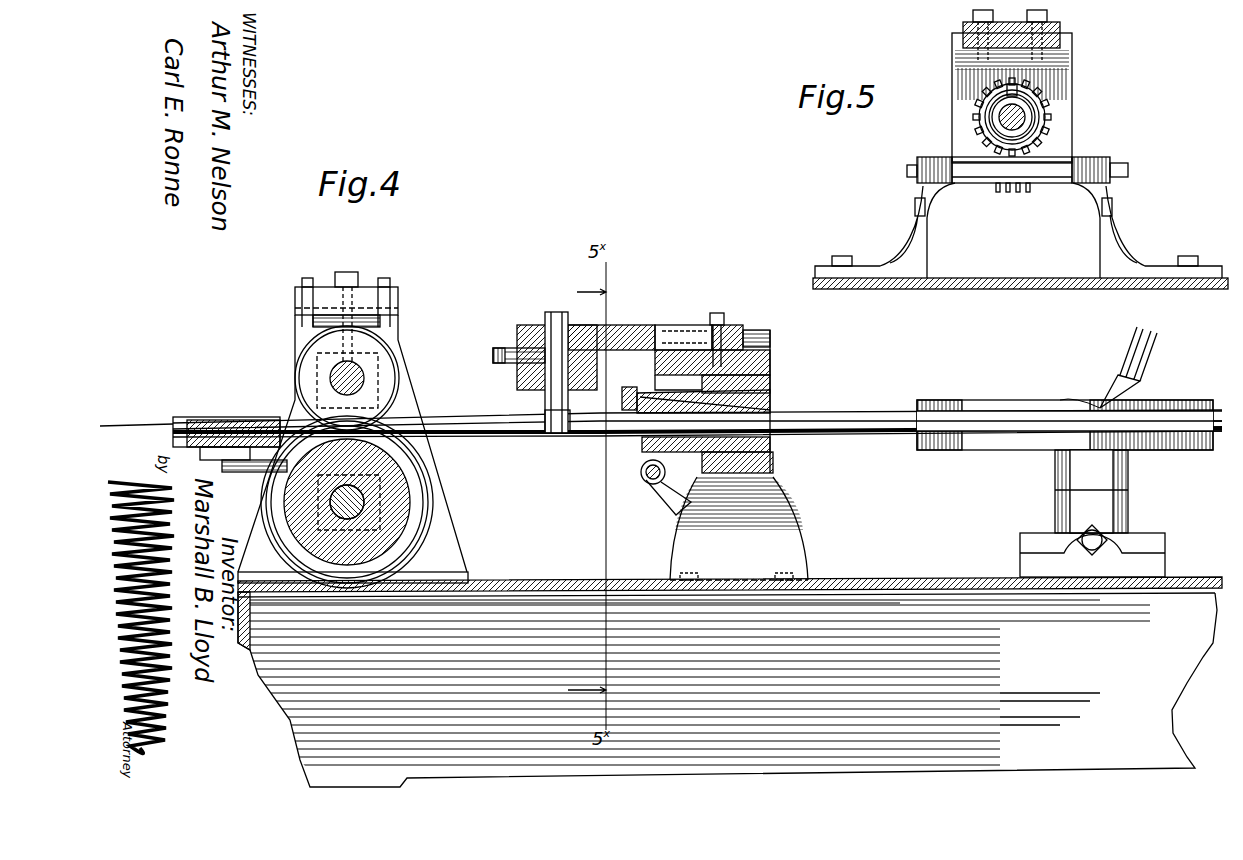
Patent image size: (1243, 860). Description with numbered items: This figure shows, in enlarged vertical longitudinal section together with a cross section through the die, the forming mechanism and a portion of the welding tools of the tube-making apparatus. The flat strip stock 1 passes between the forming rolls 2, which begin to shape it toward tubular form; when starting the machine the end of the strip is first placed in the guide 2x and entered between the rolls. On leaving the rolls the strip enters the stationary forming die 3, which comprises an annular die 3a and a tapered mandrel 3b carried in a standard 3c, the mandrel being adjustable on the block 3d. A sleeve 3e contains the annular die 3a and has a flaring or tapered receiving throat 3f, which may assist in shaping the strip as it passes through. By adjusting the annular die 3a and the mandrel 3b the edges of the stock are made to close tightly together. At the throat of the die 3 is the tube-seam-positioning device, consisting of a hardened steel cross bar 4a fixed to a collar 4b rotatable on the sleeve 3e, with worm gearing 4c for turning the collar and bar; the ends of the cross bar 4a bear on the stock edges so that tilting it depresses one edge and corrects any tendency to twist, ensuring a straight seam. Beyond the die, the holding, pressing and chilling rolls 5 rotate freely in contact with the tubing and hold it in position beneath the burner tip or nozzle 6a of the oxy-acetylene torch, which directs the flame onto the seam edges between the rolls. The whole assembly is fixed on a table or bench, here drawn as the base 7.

In FIG. 4, the flat strip stock 1 is at (137, 423).
In FIG. 4, the forming rolls 2 is at (317, 368).
In FIG. 4, the guide 2x is at (223, 424).
In FIG. 4, the stationary forming die 3 is at (719, 455).
In FIG. 4, the annular die 3a is at (772, 375).
In FIG. 4, the tapered mandrel 3b is at (575, 435).
In FIG. 5, the tapered mandrel 3b is at (1030, 122).
In FIG. 4, the standard 3c is at (787, 524).
In FIG. 4, the block 3d is at (623, 325).
In FIG. 5, the block 3d is at (1060, 32).
In FIG. 4, the sleeve 3e is at (678, 394).
In FIG. 5, the sleeve 3e is at (990, 128).
In FIG. 4, the receiving throat 3f is at (640, 449).
In FIG. 5, the receiving throat 3f is at (1045, 143).
In FIG. 5, the cross bar 4a is at (1050, 103).
In FIG. 5, the collar 4b is at (992, 106).
In FIG. 5, the worm gearing 4c is at (999, 181).
In FIG. 4, the holding, pressing and chilling rolls 5 is at (1007, 407).
In FIG. 4, the burner tip or nozzle 6a is at (1103, 398).
In FIG. 4, the base 7 is at (903, 588).